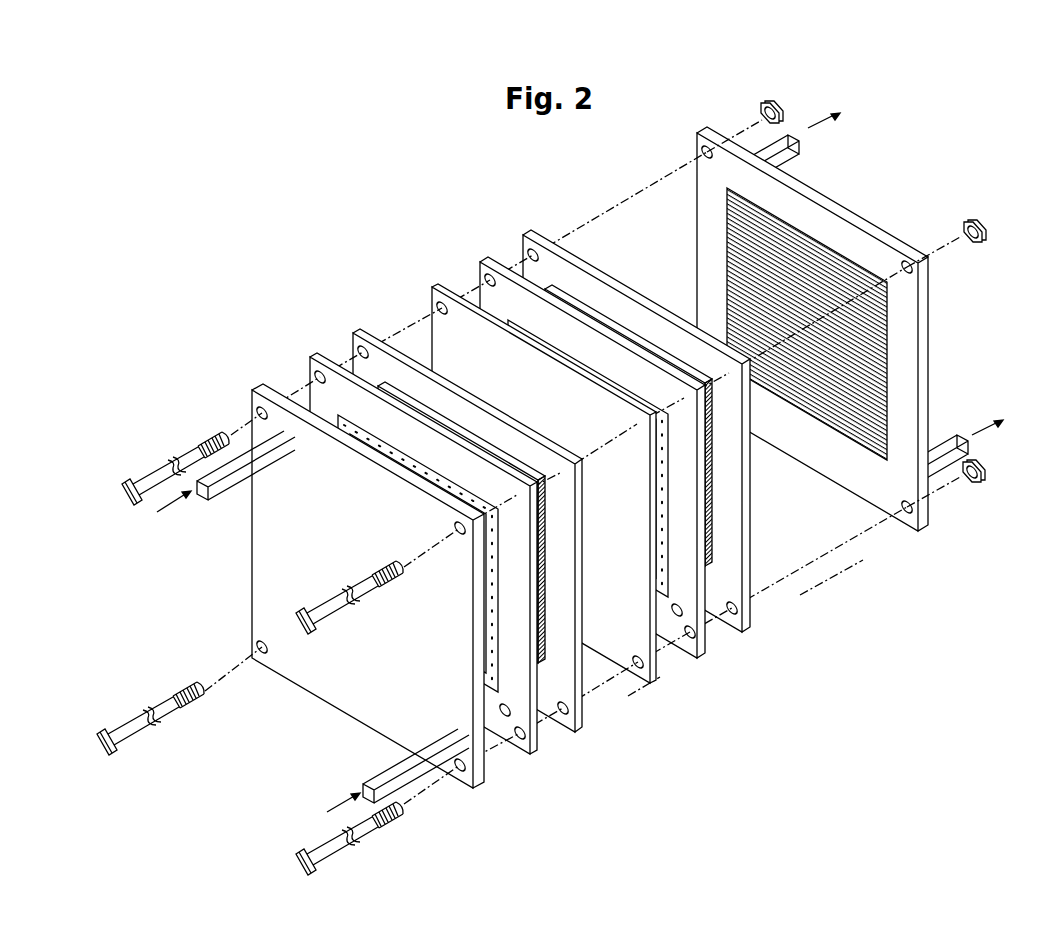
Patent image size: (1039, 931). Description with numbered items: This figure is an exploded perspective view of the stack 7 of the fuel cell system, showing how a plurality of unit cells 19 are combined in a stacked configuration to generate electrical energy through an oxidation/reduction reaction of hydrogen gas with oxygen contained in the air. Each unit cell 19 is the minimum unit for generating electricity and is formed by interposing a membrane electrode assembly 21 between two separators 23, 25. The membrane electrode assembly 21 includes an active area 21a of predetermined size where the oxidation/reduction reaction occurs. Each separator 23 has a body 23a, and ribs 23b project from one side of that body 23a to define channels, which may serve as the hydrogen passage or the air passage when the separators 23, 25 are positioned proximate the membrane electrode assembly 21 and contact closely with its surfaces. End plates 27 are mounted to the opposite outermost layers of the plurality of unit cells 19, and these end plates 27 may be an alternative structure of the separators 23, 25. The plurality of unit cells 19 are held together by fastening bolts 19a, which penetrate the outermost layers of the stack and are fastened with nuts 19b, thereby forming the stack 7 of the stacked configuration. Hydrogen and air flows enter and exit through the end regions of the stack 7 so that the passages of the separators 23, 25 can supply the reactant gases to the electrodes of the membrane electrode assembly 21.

The stack 7 is at (287, 241).
The unit cell 19 is at (522, 192).
The fastening bolt 19a is at (166, 467).
The nut 19b is at (773, 103).
The membrane electrode assembly 21 is at (493, 257).
The active area 21a is at (662, 593).
The separator 23 is at (444, 290).
The body 23a is at (715, 557).
The rib 23b is at (818, 440).
The separator 25 is at (533, 231).
The end plate 27 is at (833, 346).